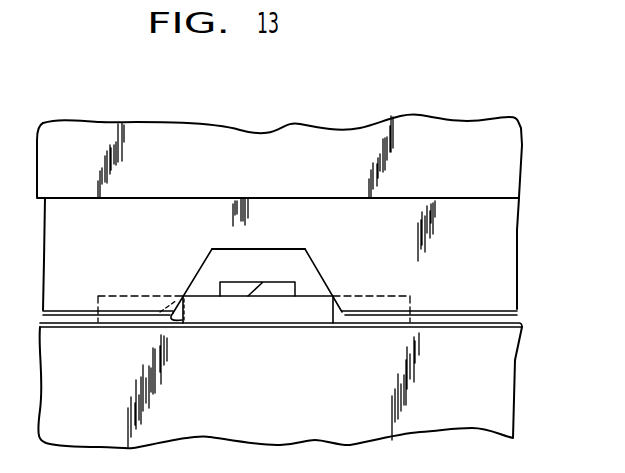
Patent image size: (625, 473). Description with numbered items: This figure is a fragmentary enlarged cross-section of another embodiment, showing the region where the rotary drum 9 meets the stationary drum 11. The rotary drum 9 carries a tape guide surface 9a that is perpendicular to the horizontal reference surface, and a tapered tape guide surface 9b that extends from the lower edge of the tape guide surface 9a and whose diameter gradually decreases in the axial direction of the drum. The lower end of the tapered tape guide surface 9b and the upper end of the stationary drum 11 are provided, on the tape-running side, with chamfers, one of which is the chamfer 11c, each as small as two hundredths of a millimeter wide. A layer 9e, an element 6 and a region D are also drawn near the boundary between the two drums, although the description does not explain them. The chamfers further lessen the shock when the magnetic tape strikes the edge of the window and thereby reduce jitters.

The rotary drum 9 is at (524, 140).
The tape guide surface 9a is at (503, 176).
The tapered tape guide surface 9b is at (508, 243).
The conductive layer 9e is at (510, 303).
The semiconductor element 6 is at (279, 281).
The gap region D is at (182, 296).
The chamfer 11c is at (513, 330).
The stationary drum 11 is at (515, 398).